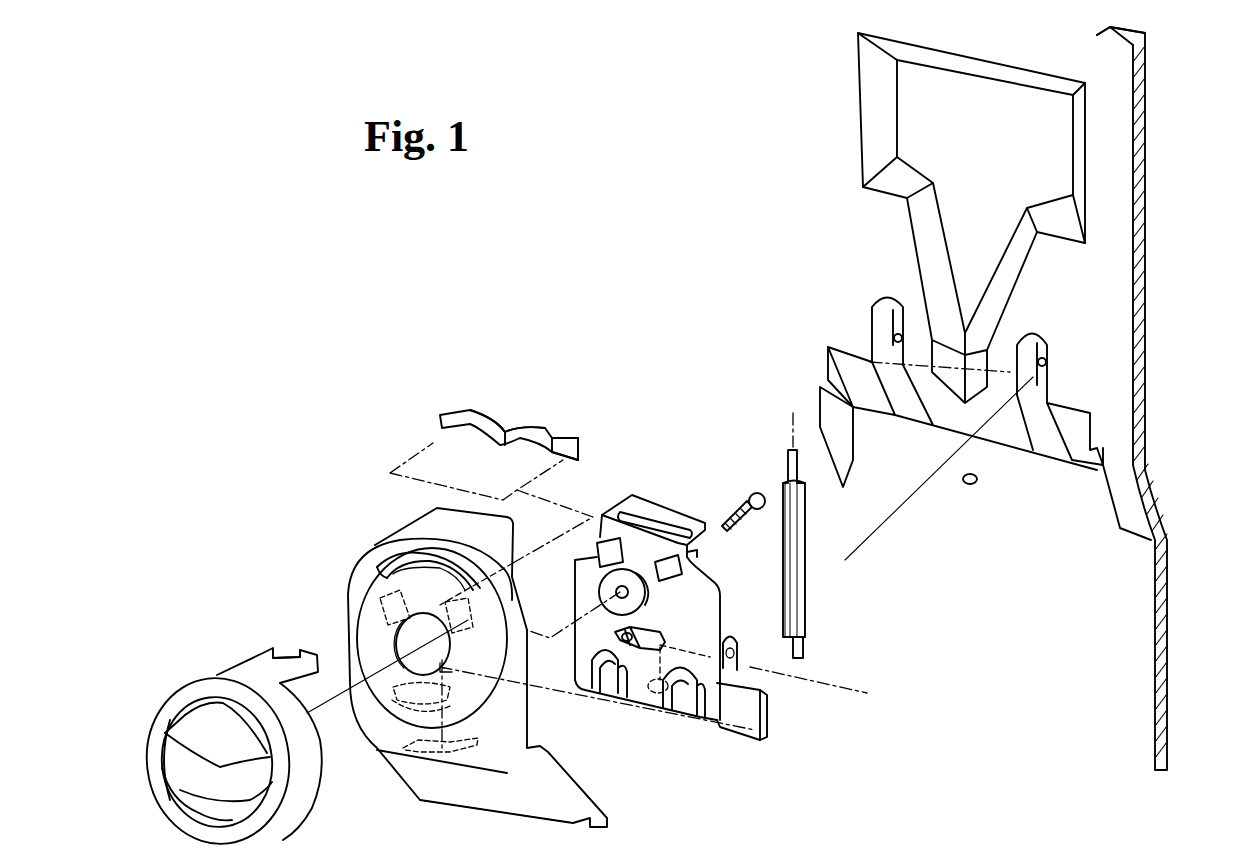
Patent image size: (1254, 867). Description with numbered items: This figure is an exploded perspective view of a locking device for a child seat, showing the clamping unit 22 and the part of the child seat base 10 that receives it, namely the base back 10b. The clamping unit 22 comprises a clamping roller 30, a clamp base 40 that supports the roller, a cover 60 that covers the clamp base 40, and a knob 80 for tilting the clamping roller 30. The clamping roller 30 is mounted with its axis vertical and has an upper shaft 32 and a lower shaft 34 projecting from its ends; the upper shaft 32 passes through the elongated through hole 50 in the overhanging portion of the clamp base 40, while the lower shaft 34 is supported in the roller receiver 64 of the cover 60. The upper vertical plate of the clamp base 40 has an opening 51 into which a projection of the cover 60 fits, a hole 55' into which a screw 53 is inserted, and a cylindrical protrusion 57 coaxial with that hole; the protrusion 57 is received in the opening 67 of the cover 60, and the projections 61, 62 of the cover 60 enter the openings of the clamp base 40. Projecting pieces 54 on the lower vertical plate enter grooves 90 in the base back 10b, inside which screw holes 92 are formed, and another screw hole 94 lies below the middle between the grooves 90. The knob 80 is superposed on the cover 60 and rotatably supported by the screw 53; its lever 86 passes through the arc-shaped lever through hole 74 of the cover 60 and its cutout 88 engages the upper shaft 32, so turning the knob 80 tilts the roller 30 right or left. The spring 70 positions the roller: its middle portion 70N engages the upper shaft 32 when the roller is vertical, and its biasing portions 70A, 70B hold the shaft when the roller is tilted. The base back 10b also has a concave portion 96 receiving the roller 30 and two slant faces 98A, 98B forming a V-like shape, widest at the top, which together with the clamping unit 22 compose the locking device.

The child seat base 10 is at (1090, 723).
The base back 10b is at (1123, 378).
The clamping unit 22 is at (446, 352).
The clamping roller 30 is at (808, 608).
The upper shaft 32 is at (762, 490).
The lower shaft 34 is at (803, 648).
The clamp base 40 is at (735, 733).
The through hole 50 is at (630, 492).
The opening 51 is at (600, 548).
The screw 53 is at (745, 525).
The projecting piece 54 is at (733, 640).
The hole 55' is at (587, 591).
The cylindrical protrusion 57 is at (650, 597).
The cover 60 is at (505, 818).
The projection 61 is at (378, 597).
The projection 62 is at (385, 717).
The roller receiver 64 is at (432, 745).
The opening 67 is at (446, 653).
The spring 70 is at (440, 422).
The biasing portion 70A is at (578, 438).
The biasing portion 70B is at (483, 410).
The middle portion 70N is at (508, 432).
The lever through hole 74 is at (393, 573).
The knob 80 is at (283, 807).
The lever 86 is at (272, 648).
The cutout 88 is at (300, 652).
The groove 90 is at (873, 333).
The screw hole 92 is at (885, 310).
The screw hole 94 is at (982, 482).
The concave portion 96 is at (955, 183).
The slant face 98A is at (1020, 253).
The slant face 98B is at (923, 237).